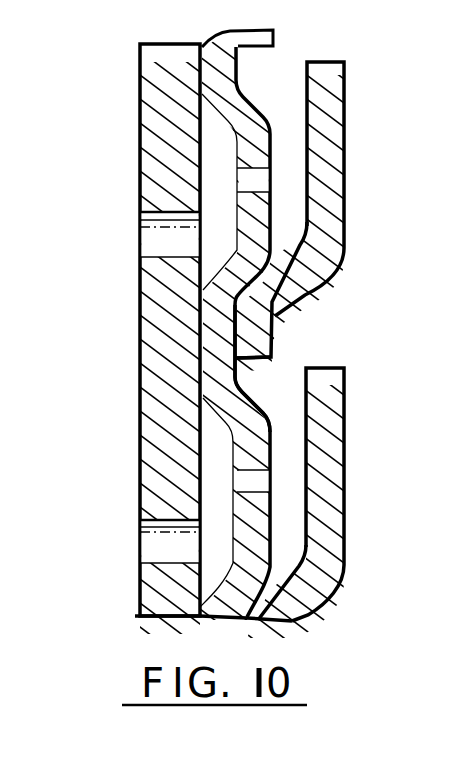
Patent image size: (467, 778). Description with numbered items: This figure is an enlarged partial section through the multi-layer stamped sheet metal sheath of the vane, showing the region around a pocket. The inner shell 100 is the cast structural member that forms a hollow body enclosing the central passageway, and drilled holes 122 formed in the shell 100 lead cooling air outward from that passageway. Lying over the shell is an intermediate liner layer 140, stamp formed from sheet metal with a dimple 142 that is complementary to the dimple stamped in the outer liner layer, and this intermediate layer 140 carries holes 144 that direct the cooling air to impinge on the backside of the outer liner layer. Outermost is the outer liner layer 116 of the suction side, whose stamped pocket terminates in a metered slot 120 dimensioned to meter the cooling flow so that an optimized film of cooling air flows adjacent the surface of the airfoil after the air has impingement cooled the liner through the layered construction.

The inner shell 100 is at (140, 355).
The suction side outer liner layer 116 is at (345, 146).
The metered slot 120 is at (303, 388).
The drilled holes 122 is at (150, 545).
The intermediate liner layer 140 is at (253, 380).
The dimple 142 is at (260, 110).
The holes 144 is at (252, 478).